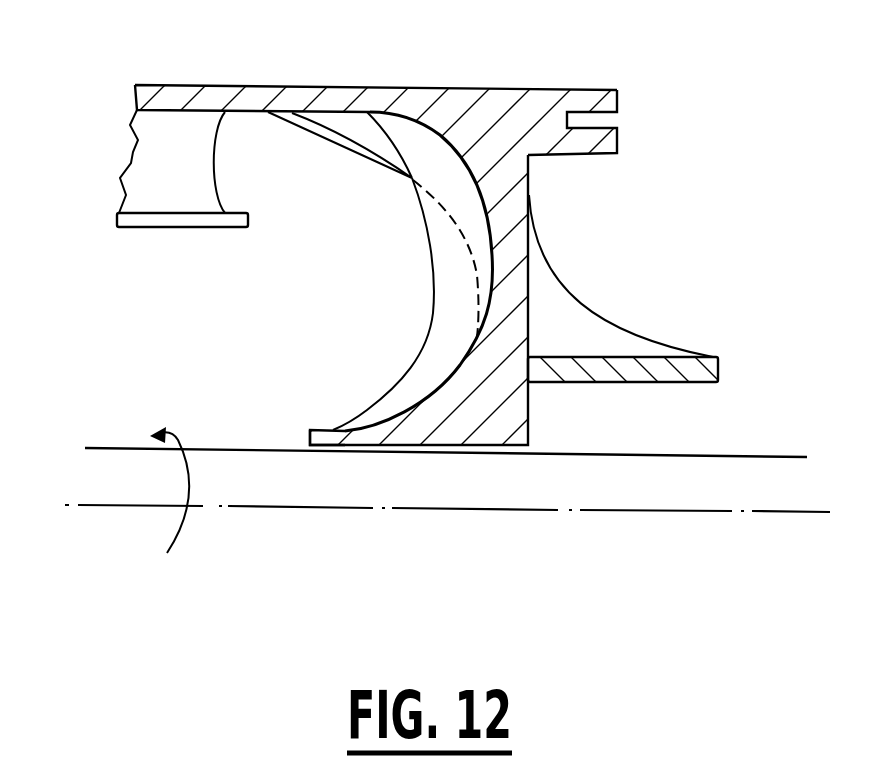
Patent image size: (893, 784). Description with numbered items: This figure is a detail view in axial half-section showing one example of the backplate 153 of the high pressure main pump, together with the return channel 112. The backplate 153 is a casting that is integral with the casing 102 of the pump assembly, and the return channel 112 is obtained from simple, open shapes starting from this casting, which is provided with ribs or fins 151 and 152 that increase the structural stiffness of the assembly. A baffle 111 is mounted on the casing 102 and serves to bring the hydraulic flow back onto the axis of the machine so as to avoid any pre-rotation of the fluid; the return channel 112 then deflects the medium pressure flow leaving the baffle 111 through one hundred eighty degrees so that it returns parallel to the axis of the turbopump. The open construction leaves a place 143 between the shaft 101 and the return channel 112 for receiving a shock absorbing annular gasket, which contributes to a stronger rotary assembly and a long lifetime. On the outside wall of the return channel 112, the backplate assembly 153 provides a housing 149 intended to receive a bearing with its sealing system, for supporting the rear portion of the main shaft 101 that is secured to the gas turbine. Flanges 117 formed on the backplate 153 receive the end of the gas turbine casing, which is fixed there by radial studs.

The shaft 101 is at (652, 512).
The casing 102 is at (303, 92).
The baffle 111 is at (158, 142).
The return channel 112 is at (440, 247).
The flanges 117 is at (580, 108).
The place for receiving a shock absorbing annular gasket 143 is at (335, 442).
The housing 149 is at (690, 380).
The rib or fin 151 is at (447, 312).
The rib or fin 152 is at (593, 313).
The backplate 153 is at (497, 410).